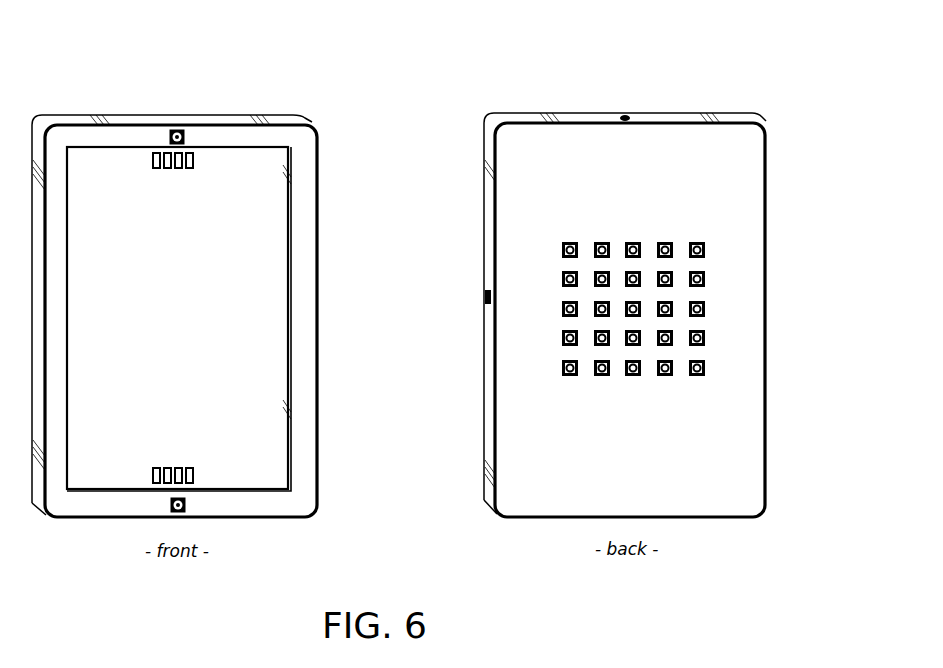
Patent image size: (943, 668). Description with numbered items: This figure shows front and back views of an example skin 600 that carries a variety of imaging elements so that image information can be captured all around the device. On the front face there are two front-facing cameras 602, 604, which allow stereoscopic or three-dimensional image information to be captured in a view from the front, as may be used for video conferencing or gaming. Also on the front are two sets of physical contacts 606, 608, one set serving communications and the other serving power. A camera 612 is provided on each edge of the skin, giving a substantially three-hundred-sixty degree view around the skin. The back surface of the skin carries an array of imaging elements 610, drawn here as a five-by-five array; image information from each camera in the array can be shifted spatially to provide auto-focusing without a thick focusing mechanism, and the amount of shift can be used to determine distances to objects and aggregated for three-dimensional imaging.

The skin 600 is at (779, 86).
The front-facing camera 602 is at (176, 129).
The second front camera 604 is at (170, 505).
The physical contacts 606 is at (168, 170).
The physical contacts 608 is at (182, 467).
The array of imaging elements 610 is at (634, 404).
The camera 612 is at (625, 114).